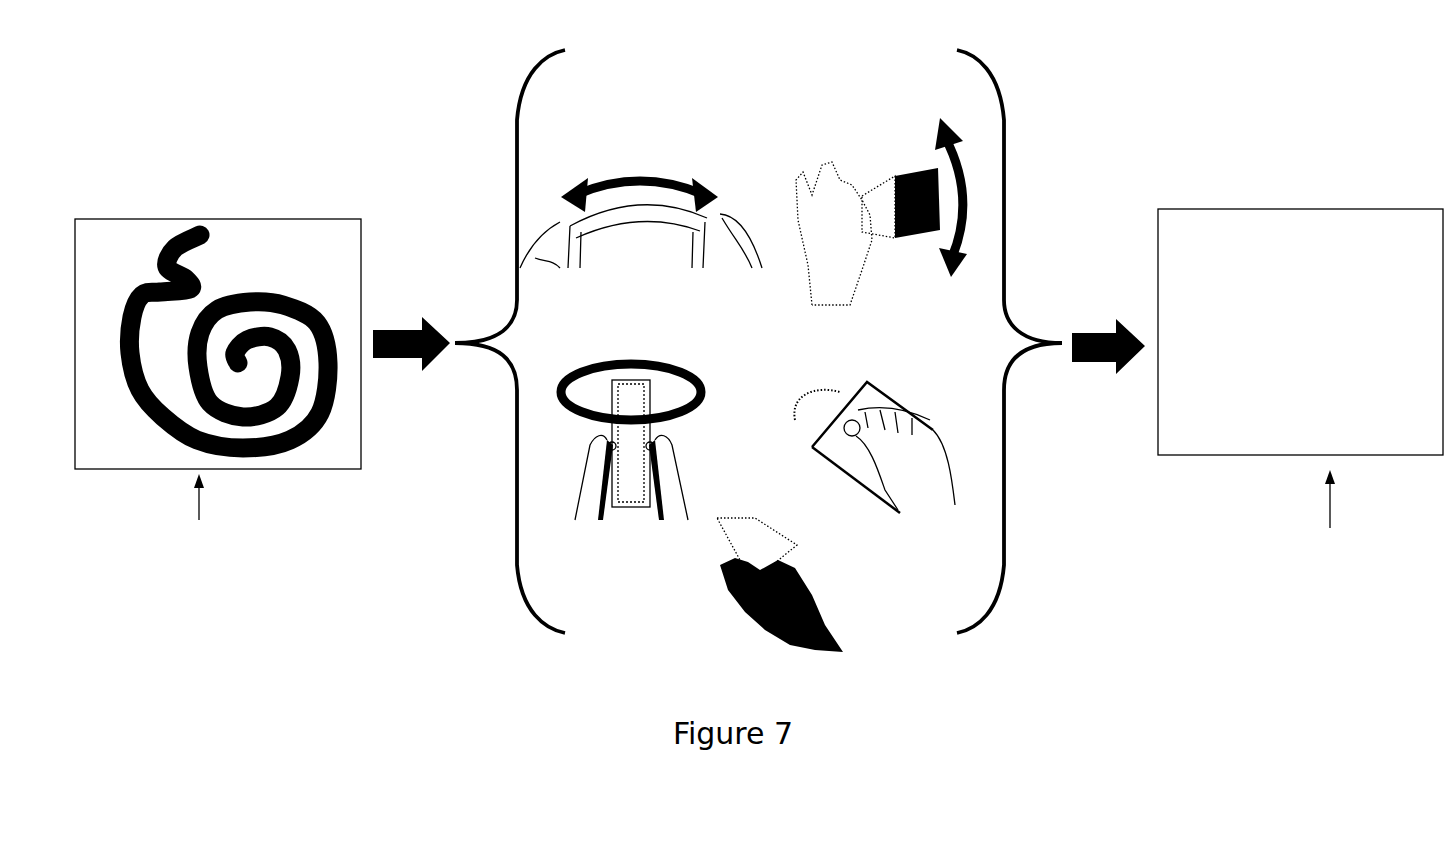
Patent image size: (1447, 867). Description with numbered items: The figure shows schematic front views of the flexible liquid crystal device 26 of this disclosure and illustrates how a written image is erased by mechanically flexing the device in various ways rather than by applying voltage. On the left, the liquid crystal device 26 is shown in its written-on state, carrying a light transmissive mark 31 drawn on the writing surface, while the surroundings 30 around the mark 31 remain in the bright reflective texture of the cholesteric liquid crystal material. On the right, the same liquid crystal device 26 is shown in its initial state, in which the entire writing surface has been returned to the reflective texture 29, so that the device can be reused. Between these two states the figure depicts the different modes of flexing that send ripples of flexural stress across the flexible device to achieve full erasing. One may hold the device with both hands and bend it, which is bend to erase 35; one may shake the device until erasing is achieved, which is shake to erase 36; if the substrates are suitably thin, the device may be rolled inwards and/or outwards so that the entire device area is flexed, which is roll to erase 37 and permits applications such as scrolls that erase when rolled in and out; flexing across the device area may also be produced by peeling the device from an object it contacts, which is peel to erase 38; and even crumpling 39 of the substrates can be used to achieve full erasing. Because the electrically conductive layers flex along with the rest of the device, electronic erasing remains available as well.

The liquid crystal device 26 is at (762, 527).
The reflective texture 29 is at (1304, 248).
The surroundings 30 is at (278, 253).
The light transmissive mark 31 is at (167, 262).
The bend to erase 35 is at (641, 200).
The shake to erase 36 is at (881, 211).
The roll to erase 37 is at (631, 420).
The peel to erase 38 is at (874, 427).
The crumpling 39 is at (780, 565).